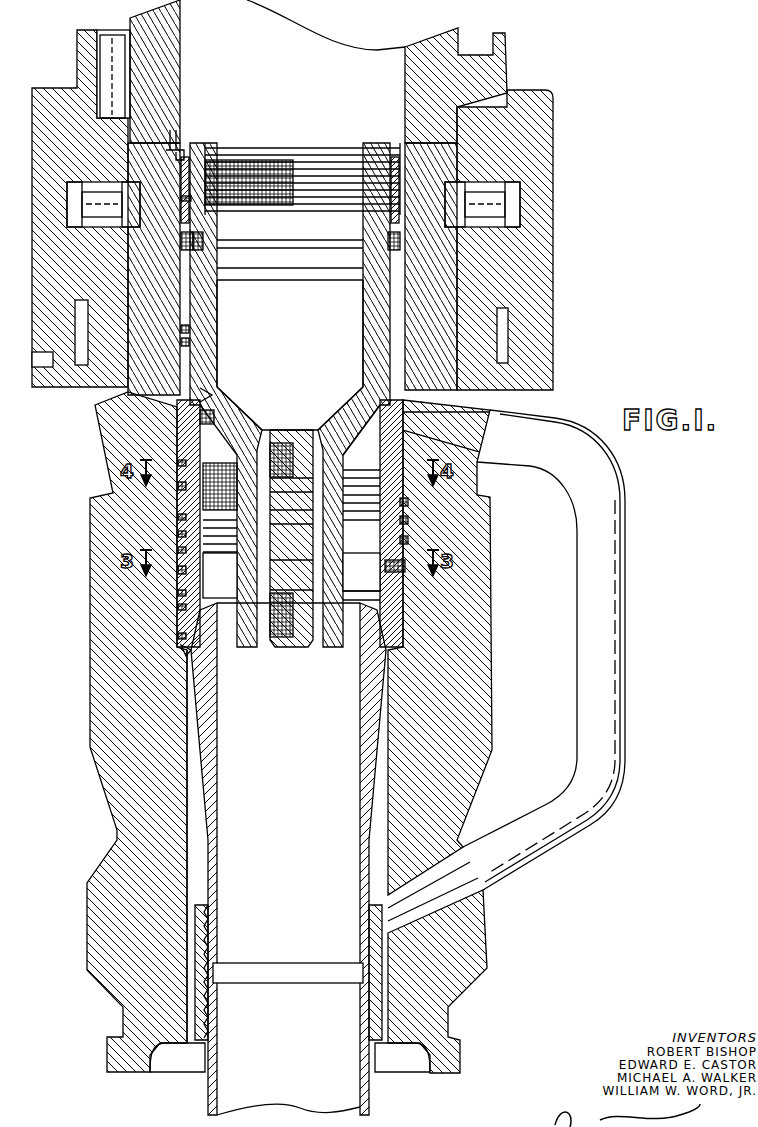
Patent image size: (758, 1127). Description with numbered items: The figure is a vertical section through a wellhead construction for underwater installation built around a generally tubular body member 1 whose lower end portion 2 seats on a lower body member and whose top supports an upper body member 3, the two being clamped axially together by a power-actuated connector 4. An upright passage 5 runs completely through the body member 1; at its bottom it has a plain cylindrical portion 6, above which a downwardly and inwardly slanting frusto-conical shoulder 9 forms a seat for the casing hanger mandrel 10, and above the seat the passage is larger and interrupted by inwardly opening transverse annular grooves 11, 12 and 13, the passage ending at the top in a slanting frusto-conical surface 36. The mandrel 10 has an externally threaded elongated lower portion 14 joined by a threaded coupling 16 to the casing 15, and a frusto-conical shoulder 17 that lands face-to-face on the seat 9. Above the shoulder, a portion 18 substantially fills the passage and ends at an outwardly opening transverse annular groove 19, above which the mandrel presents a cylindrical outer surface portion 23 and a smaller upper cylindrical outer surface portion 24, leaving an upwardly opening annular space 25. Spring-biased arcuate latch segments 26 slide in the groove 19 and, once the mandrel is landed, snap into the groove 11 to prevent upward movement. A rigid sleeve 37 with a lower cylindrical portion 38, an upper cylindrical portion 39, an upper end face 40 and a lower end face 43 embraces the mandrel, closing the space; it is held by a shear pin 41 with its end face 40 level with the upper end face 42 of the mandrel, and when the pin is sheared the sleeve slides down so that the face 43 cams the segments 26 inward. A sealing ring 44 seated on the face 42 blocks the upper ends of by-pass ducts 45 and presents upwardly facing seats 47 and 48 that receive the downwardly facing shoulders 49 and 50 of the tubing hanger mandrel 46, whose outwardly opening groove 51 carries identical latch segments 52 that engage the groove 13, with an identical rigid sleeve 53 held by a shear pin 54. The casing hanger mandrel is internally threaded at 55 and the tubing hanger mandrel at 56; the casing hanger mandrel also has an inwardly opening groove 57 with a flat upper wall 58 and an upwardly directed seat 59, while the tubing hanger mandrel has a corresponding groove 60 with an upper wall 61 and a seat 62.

The body member 1 is at (104, 467).
The lower end portion 2 is at (462, 1055).
The upper body member 3 is at (468, 42).
The power-actuated connector 4 is at (555, 140).
The upright passage 5 is at (190, 1040).
The plain cylindrical portion 6 is at (201, 891).
The frusto-conical shoulder 9 is at (184, 656).
The casing hanger mandrel 10 is at (225, 758).
The transverse annular groove 11 is at (178, 571).
The transverse annular groove 12 is at (176, 418).
The transverse annular groove 13 is at (178, 252).
The elongated lower portion 14 is at (266, 943).
The casing 15 is at (287, 1071).
The threaded coupling 16 is at (304, 968).
The frusto-conical shoulder 17 is at (186, 638).
The mandrel portion 18 is at (178, 605).
The transverse annular groove 19 is at (190, 583).
The cylindrical outer surface portion 23 is at (179, 535).
The upper cylindrical outer surface portion 24 is at (361, 507).
The annular space 25 is at (179, 550).
The arcuate latch segments 26 is at (391, 574).
The frusto-conical surface 36 is at (180, 150).
The rigid sleeve 37 is at (406, 521).
The lower cylindrical portion 38 is at (179, 519).
The upper cylindrical portion 39 is at (179, 484).
The upper end face 40 is at (180, 461).
The shear pin 41 is at (407, 505).
The upper end face 42 is at (220, 477).
The lower end face 43 is at (408, 540).
The sealing ring 44 is at (361, 430).
The by-pass ducts 45 is at (626, 660).
The tubing hanger mandrel 46 is at (220, 345).
The transverse annular seat 47 is at (208, 394).
The transverse annular seat 48 is at (184, 330).
The downwardly facing shoulder 49 is at (198, 423).
The downwardly facing shoulder 50 is at (180, 343).
The transverse annular groove 51 is at (205, 243).
The arcuate latch segments 52 is at (181, 240).
The rigid sleeve 53 is at (180, 168).
The shear pin 54 is at (180, 199).
The internal threads 55 is at (361, 478).
The internal threads 56 is at (270, 172).
The inwardly opening groove 57 is at (346, 596).
The upper wall 58 is at (214, 574).
The internal seat 59 is at (359, 572).
The inwardly opening groove 60 is at (228, 283).
The upper wall 61 is at (366, 271).
The transverse annular seat 62 is at (366, 246).